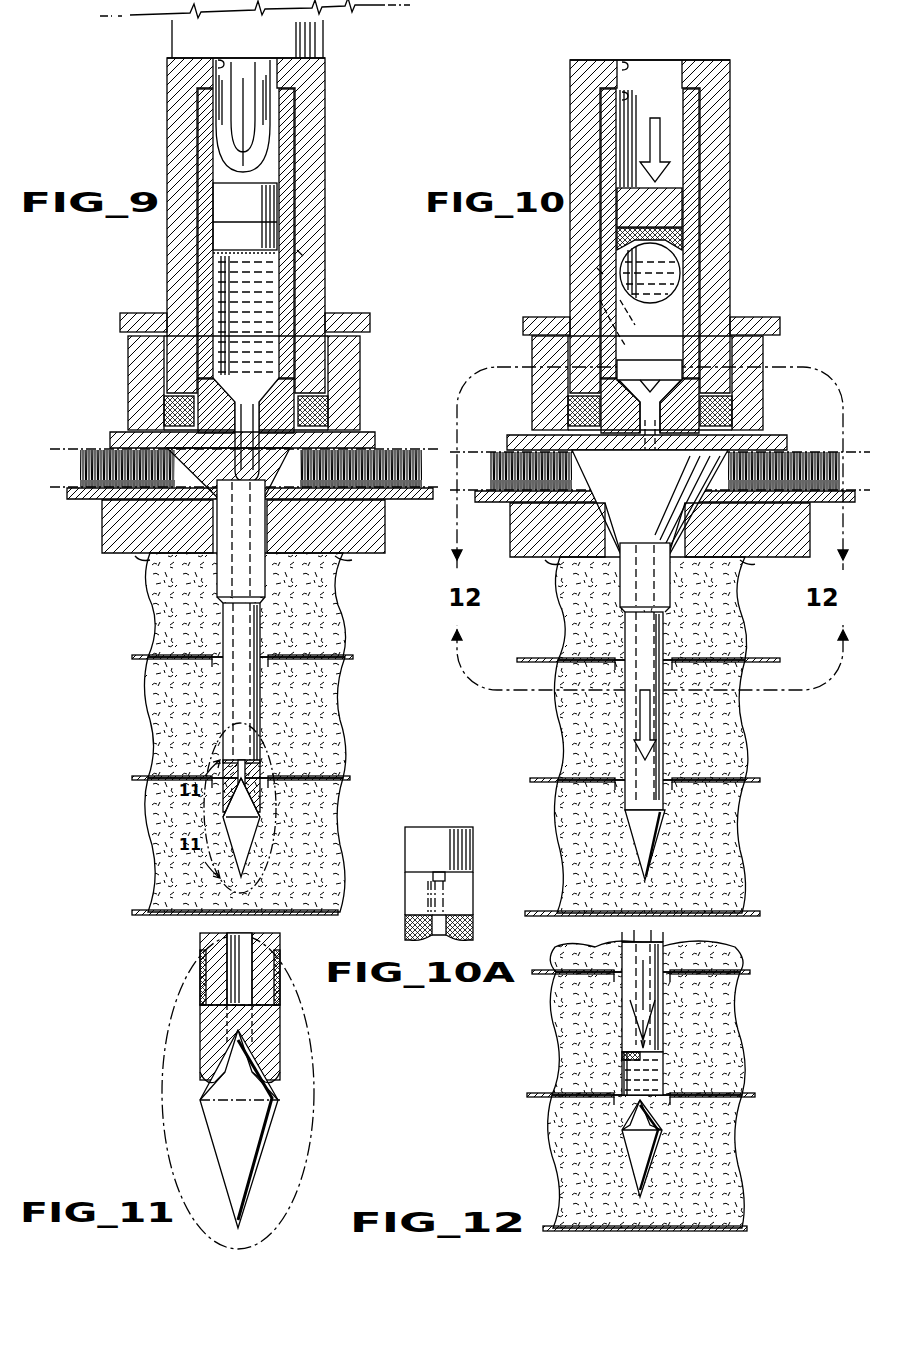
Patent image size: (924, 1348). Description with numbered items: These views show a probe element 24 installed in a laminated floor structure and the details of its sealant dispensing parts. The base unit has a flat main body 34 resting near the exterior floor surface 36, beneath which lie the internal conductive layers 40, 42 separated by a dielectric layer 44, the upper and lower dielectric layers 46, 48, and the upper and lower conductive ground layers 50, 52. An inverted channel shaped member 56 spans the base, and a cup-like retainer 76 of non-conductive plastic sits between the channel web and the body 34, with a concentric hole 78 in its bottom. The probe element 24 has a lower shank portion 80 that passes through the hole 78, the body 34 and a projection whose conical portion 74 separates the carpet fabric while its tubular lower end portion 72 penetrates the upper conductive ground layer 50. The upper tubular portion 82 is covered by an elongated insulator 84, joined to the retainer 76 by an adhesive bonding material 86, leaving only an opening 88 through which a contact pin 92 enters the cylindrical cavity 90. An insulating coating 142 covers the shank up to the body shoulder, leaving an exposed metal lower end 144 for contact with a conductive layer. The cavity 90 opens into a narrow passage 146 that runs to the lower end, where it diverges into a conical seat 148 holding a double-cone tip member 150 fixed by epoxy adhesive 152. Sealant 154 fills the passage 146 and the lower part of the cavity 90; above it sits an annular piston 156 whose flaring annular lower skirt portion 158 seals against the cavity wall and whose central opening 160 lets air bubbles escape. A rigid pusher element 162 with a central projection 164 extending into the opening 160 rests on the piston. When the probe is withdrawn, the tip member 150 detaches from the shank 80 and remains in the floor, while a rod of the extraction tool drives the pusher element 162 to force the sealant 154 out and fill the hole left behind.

In FIG. 9, the probe element 24 is at (300, 252).
In FIG. 10, the probe element 24 is at (598, 270).
In FIG. 9, the main body 34 is at (115, 436).
In FIG. 10, the main body 34 is at (507, 437).
In FIG. 9, the exterior floor surface 36 is at (392, 462).
In FIG. 10, the exterior floor surface 36 is at (800, 462).
In FIG. 9, the internal conductive layer 40 is at (132, 657).
In FIG. 10, the internal conductive layer 40 is at (780, 660).
In FIG. 12, the internal conductive layer 40 is at (750, 972).
In FIG. 9, the internal conductive layer 42 is at (132, 778).
In FIG. 10, the internal conductive layer 42 is at (760, 780).
In FIG. 12, the internal conductive layer 42 is at (755, 1095).
In FIG. 9, the dielectric layer 44 is at (150, 728).
In FIG. 10, the dielectric layer 44 is at (740, 738).
In FIG. 12, the dielectric layer 44 is at (730, 1040).
In FIG. 9, the upper dielectric layer 46 is at (150, 605).
In FIG. 10, the upper dielectric layer 46 is at (740, 625).
In FIG. 12, the upper dielectric layer 46 is at (720, 950).
In FIG. 9, the lower dielectric layer 48 is at (152, 845).
In FIG. 10, the lower dielectric layer 48 is at (738, 850).
In FIG. 12, the lower dielectric layer 48 is at (728, 1162).
In FIG. 9, the upper conductive ground layer 50 is at (142, 558).
In FIG. 10, the upper conductive ground layer 50 is at (752, 560).
In FIG. 9, the lower conductive ground layer 52 is at (132, 912).
In FIG. 10, the lower conductive ground layer 52 is at (760, 913).
In FIG. 12, the lower conductive ground layer 52 is at (747, 1228).
In FIG. 9, the inverted channel shaped member 56 is at (355, 313).
In FIG. 10, the inverted channel shaped member 56 is at (760, 317).
In FIG. 9, the tubular lower end portion 72 is at (250, 577).
In FIG. 10, the tubular lower end portion 72 is at (630, 580).
In FIG. 9, the conical portion 74 is at (110, 528).
In FIG. 10, the conical portion 74 is at (510, 525).
In FIG. 9, the cup-like retainer 76 is at (360, 380).
In FIG. 10, the cup-like retainer 76 is at (763, 356).
In FIG. 9, the concentric hole 78 is at (262, 440).
In FIG. 10, the concentric hole 78 is at (672, 420).
In FIG. 9, the lower shank portion 80 is at (250, 640).
In FIG. 10, the lower shank portion 80 is at (632, 635).
In FIG. 11, the lower shank portion 80 is at (210, 950).
In FIG. 12, the lower shank portion 80 is at (630, 1020).
In FIG. 9, the upper tubular portion 82 is at (296, 280).
In FIG. 10, the upper tubular portion 82 is at (700, 128).
In FIG. 9, the insulator 84 is at (325, 154).
In FIG. 10, the insulator 84 is at (730, 82).
In FIG. 9, the adhesive bonding material 86 is at (170, 408).
In FIG. 10, the adhesive bonding material 86 is at (575, 408).
In FIG. 9, the opening 88 is at (215, 65).
In FIG. 10, the opening 88 is at (620, 66).
In FIG. 10, the cylindrical cavity 90 is at (625, 118).
In FIG. 9, the contact pin 92 is at (225, 143).
In FIG. 11, the insulating coating 142 is at (200, 982).
In FIG. 11, the lower end 144 is at (280, 1037).
In FIG. 9, the passage 146 is at (245, 770).
In FIG. 11, the passage 146 is at (247, 968).
In FIG. 11, the conical seat 148 is at (208, 1080).
In FIG. 11, the tip member 150 is at (225, 1145).
In FIG. 12, the tip member 150 is at (635, 1152).
In FIG. 11, the epoxy adhesive 152 is at (272, 1090).
In FIG. 9, the sealant 154 is at (237, 300).
In FIG. 10, the sealant 154 is at (668, 268).
In FIG. 12, the sealant 154 is at (622, 1073).
In FIG. 10, the piston 156 is at (680, 235).
In FIG. 10A, the piston 156 is at (405, 935).
In FIG. 10A, the annular lower skirt portion 158 is at (473, 935).
In FIG. 10A, the central opening 160 is at (440, 912).
In FIG. 10, the pusher element 162 is at (665, 200).
In FIG. 10A, the pusher element 162 is at (430, 835).
In FIG. 10A, the central projection 164 is at (433, 877).